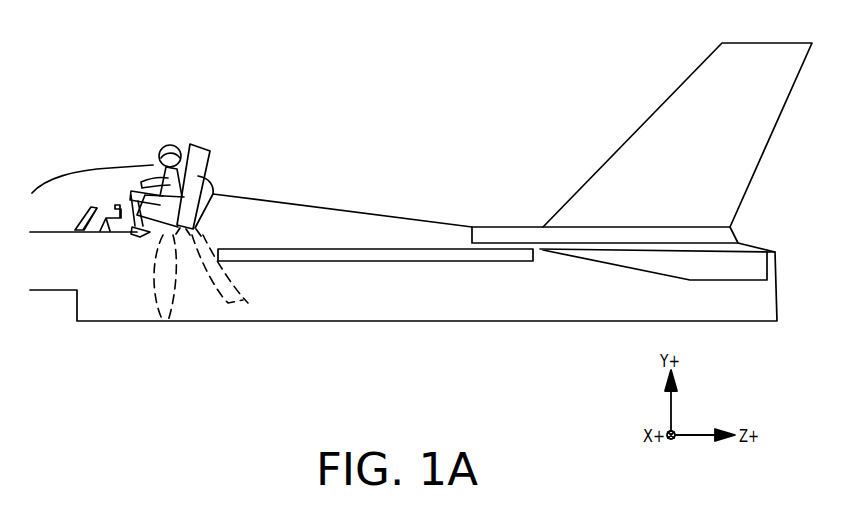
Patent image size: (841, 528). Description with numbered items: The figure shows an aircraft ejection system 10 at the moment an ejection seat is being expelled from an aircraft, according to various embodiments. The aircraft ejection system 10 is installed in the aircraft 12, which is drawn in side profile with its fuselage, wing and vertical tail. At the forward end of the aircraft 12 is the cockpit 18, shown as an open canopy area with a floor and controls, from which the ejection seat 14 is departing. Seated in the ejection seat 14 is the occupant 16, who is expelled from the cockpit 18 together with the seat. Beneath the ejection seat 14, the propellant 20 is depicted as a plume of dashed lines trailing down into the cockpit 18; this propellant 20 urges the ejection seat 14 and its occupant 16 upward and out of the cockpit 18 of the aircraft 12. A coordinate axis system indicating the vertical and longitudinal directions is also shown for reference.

The aircraft ejection system 10 is at (336, 117).
The aircraft 12 is at (416, 299).
The ejection seat 14 is at (192, 163).
The occupant 16 is at (163, 150).
The cockpit 18 is at (47, 215).
The propellant 20 is at (163, 279).